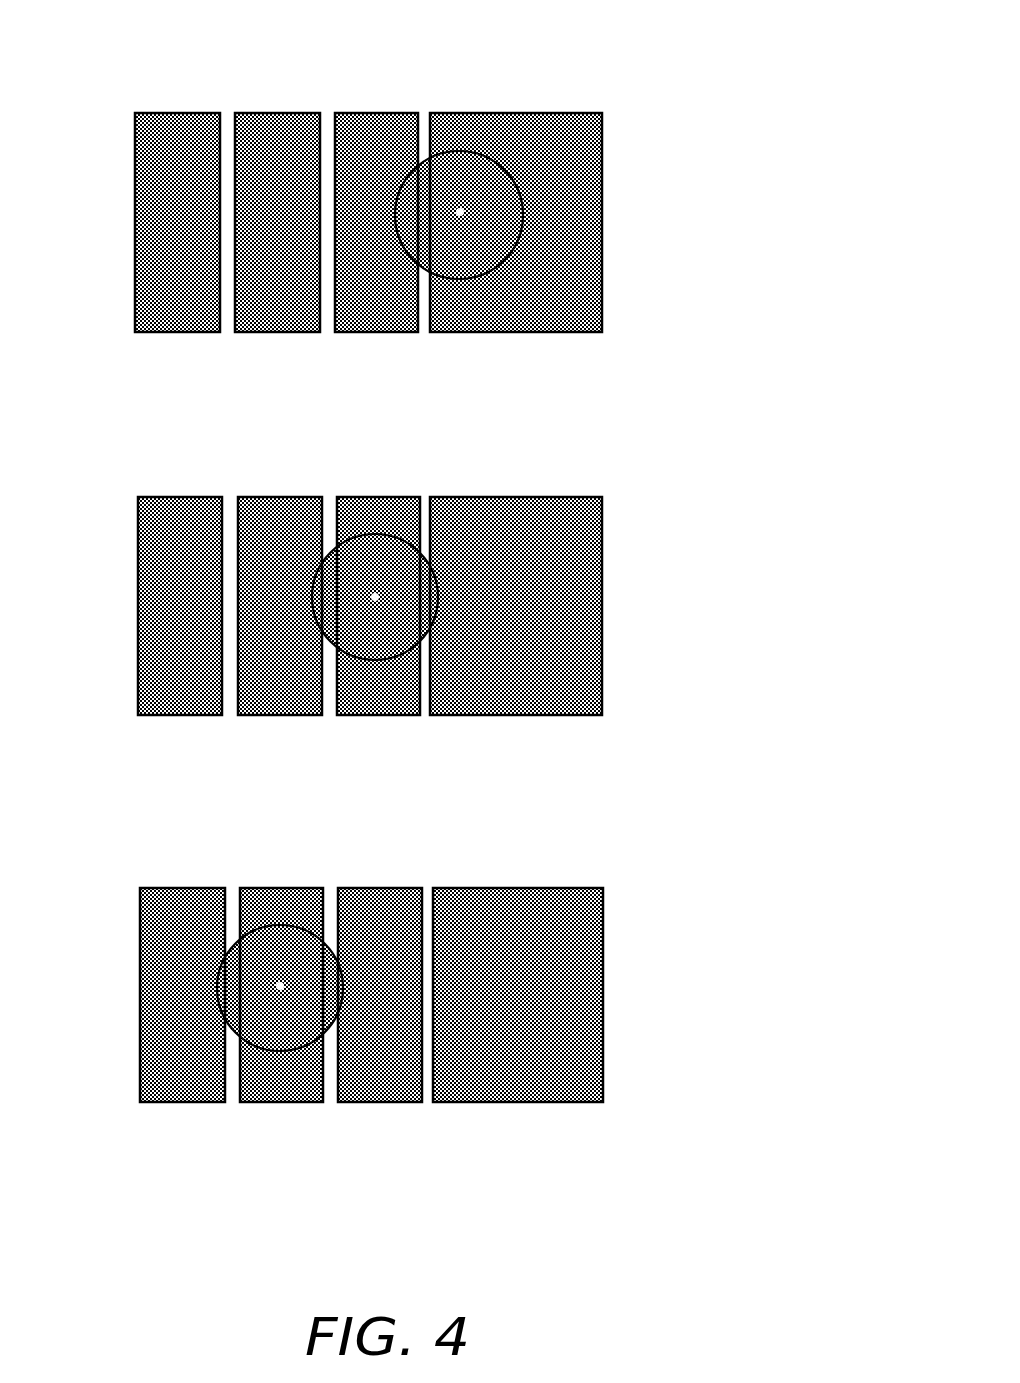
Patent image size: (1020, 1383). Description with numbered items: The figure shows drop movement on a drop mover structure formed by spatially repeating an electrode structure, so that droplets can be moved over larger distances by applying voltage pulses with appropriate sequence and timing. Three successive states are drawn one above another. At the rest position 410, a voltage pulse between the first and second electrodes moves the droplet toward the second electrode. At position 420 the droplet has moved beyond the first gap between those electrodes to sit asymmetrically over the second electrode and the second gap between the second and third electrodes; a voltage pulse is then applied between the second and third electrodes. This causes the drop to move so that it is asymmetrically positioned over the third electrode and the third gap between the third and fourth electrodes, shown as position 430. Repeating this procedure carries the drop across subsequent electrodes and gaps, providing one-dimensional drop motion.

The rest position 410 is at (366, 195).
The second position 420 is at (368, 585).
The third position 430 is at (370, 975).